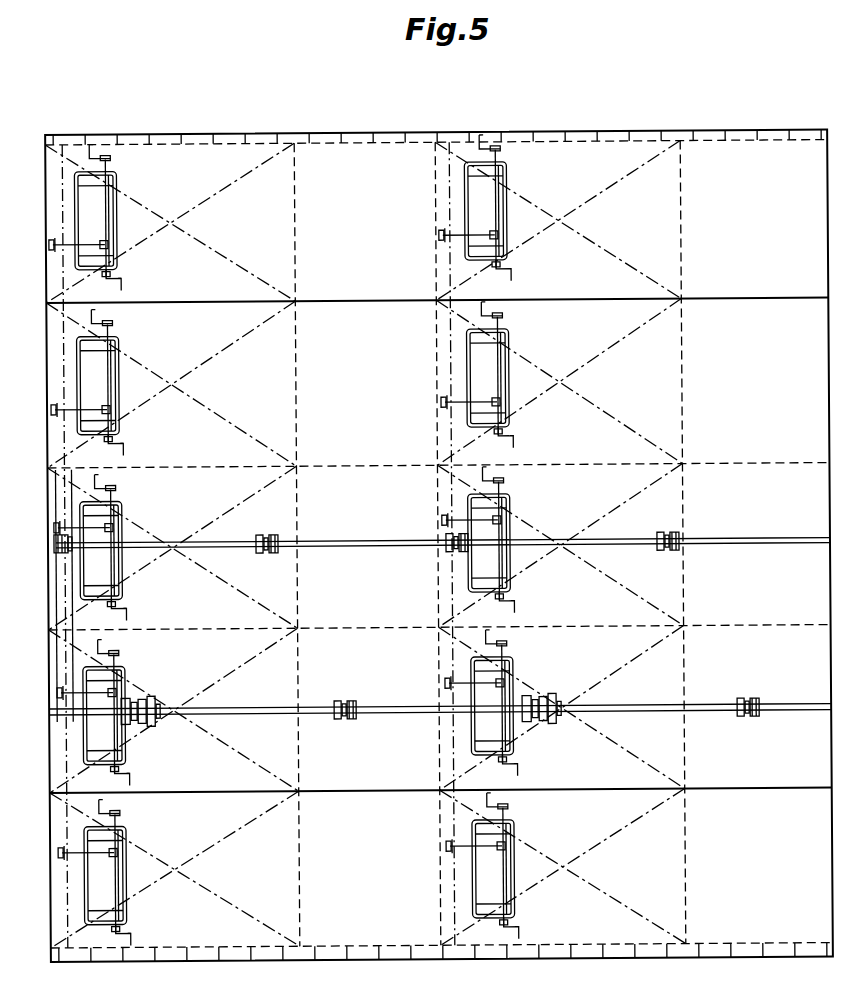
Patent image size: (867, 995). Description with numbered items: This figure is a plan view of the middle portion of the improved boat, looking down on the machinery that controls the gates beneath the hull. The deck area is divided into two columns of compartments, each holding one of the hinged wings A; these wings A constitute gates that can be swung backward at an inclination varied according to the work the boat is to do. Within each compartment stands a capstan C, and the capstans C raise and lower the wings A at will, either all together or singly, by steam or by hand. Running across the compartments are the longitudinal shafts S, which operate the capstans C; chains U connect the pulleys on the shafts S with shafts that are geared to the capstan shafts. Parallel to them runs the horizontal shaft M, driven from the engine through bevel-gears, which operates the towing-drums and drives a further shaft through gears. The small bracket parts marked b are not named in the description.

The wings A is at (365, 544).
The capstans C is at (283, 540).
The longitudinal shafts S is at (442, 538).
The horizontal shaft M is at (440, 717).
The chains U is at (255, 551).
The bracket b is at (260, 640).